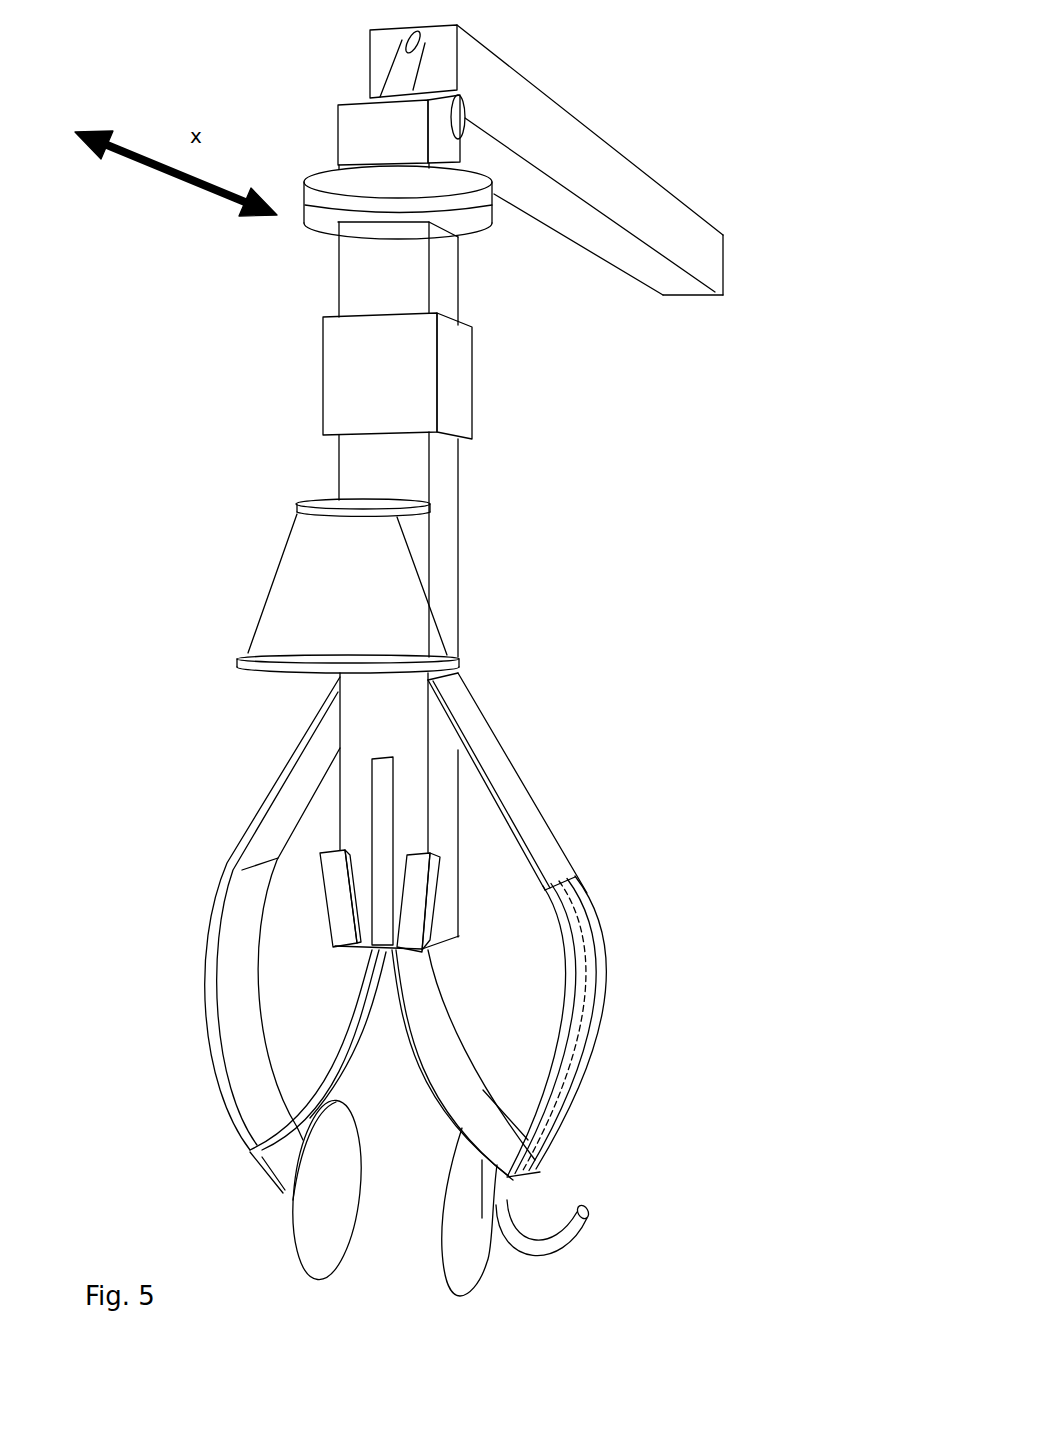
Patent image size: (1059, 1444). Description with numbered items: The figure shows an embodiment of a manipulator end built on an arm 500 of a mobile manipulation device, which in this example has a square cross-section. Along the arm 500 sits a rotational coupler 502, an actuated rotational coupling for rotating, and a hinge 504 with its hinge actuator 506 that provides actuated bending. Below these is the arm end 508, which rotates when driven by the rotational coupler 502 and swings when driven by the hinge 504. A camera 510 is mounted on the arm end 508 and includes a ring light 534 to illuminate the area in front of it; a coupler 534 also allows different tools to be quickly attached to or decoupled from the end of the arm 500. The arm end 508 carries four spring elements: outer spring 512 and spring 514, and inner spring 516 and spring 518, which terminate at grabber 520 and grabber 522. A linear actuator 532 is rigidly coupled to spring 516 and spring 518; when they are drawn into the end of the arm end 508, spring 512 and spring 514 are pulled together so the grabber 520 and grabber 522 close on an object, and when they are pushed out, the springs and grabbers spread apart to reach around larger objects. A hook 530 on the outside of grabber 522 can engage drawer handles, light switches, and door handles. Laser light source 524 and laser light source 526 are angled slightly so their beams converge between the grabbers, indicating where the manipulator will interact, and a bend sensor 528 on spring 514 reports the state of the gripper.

The arm 500 is at (693, 218).
The rotational coupler 502 is at (477, 230).
The hinge 504 is at (461, 117).
The hinge actuator 506 is at (393, 75).
The arm end 508 is at (453, 560).
The camera 510 is at (272, 588).
The spring 512 is at (205, 960).
The spring 514 is at (525, 808).
The spring 516 is at (323, 1090).
The spring 518 is at (483, 1090).
The grabber 520 is at (335, 1252).
The grabber 522 is at (460, 1277).
The laser light source 524 is at (333, 928).
The laser light source 526 is at (423, 943).
The bend sensor 528 is at (602, 1020).
The hook 530 is at (592, 1212).
The linear actuator 532 is at (385, 760).
The ring light 534 is at (468, 398).